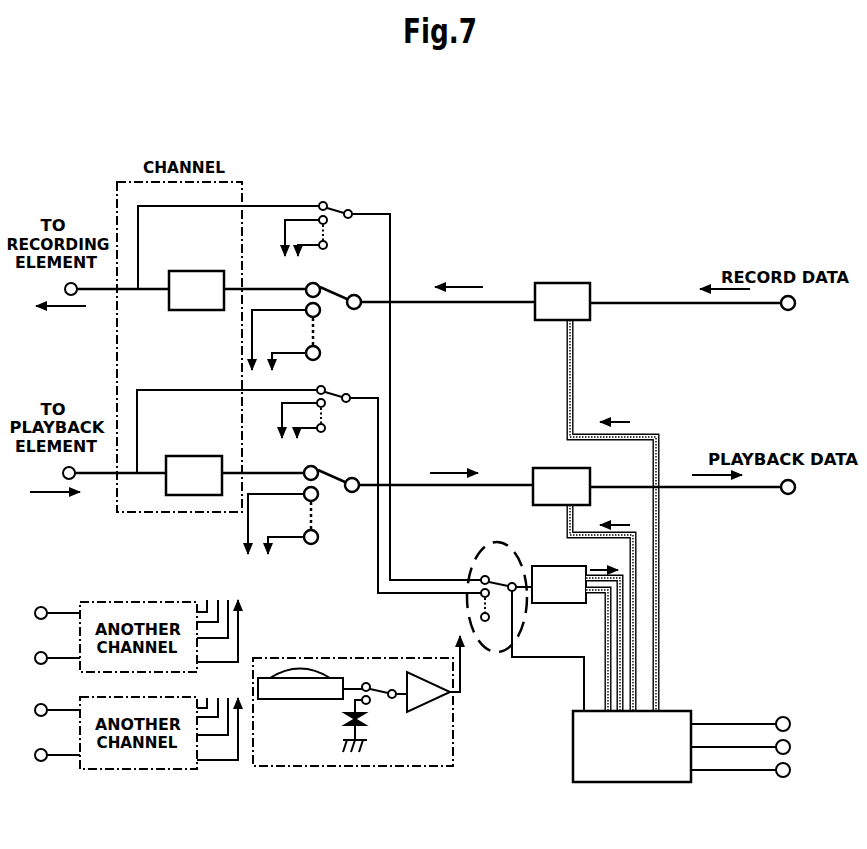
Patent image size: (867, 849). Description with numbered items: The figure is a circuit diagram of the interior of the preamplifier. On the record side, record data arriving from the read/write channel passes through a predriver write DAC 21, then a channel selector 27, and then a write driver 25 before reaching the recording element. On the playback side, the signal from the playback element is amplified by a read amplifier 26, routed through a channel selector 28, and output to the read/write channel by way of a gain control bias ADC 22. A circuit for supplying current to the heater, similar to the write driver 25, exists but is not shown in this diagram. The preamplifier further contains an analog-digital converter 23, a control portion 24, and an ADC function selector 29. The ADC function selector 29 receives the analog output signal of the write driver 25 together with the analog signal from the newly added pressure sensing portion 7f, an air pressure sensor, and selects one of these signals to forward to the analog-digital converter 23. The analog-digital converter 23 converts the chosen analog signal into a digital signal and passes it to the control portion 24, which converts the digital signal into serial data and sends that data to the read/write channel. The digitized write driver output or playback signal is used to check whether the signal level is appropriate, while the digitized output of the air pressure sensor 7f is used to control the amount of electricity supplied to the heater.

The predriver write DAC 21 is at (579, 283).
The gain control bias ADC 22 is at (591, 479).
The analog-digital converter 23 is at (547, 565).
The control portion 24 is at (627, 783).
The write driver 25 is at (198, 270).
The read amplifier 26 is at (197, 455).
The channel selector 27 is at (336, 294).
The channel selector 28 is at (330, 478).
The ADC function selector 29 is at (474, 562).
The pressure sensing portion 7f is at (324, 656).